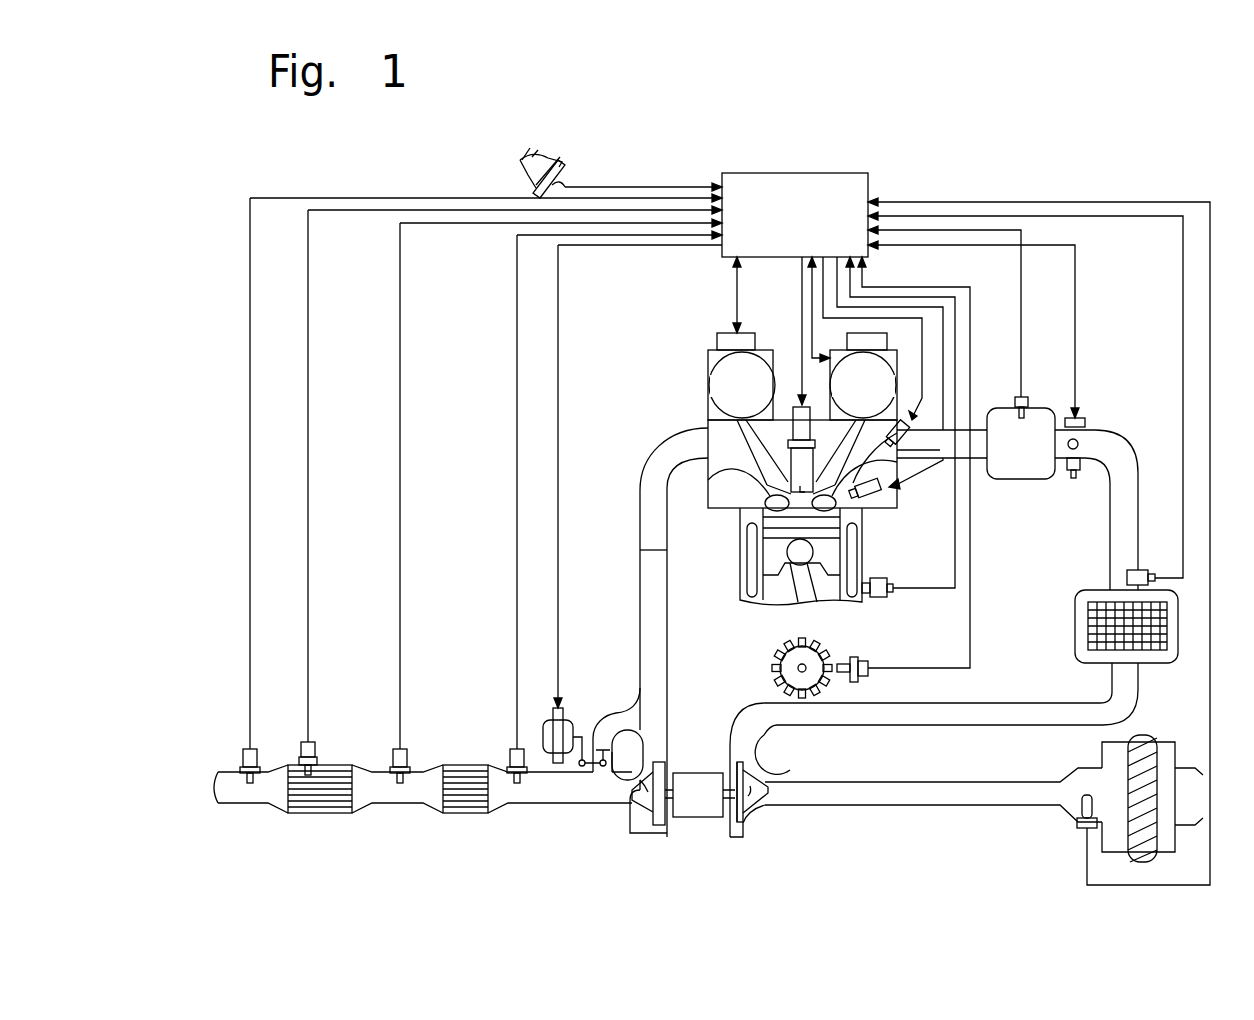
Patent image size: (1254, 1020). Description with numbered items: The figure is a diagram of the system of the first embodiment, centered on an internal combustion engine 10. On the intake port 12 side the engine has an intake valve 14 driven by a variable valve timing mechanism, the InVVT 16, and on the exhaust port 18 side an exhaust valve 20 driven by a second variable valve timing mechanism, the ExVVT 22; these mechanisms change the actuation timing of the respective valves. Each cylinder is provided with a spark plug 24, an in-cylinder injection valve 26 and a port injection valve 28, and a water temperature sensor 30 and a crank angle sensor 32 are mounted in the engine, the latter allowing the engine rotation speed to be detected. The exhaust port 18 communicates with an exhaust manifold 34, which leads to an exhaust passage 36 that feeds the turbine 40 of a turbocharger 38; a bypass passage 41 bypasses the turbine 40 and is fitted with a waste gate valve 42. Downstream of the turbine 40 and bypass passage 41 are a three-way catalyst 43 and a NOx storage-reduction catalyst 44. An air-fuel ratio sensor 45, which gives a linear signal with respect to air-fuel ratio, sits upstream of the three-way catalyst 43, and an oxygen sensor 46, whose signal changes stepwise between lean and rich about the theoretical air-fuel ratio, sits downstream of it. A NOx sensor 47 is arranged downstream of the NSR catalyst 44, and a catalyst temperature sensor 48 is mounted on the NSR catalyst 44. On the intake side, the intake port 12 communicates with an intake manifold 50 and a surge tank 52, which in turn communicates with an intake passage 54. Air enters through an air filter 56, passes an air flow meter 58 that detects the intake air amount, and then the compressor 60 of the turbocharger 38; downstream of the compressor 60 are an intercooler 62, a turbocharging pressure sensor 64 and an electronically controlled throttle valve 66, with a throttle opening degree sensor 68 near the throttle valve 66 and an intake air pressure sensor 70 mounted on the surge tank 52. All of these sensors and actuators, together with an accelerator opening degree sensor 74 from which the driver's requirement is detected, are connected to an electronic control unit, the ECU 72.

The internal combustion engine 10 is at (680, 350).
The intake port 12 is at (885, 494).
The intake valve 14 is at (830, 510).
The variable valve timing mechanism (InVVT) 16 is at (900, 352).
The exhaust port 18 is at (750, 468).
The exhaust valve 20 is at (743, 518).
The variable valve timing mechanism (ExVVT) 22 is at (708, 385).
The spark plug 24 is at (790, 438).
The in-cylinder injection valve 26 is at (862, 503).
The port injection valve 28 is at (913, 425).
The water temperature sensor 30 is at (888, 598).
The crank angle sensor 32 is at (868, 662).
The exhaust manifold 34 is at (650, 468).
The exhaust passage 36 is at (640, 568).
The turbocharger 38 is at (713, 778).
The turbine 40 is at (637, 800).
The bypass passage 41 is at (615, 712).
The waste gate valve 42 is at (602, 768).
The three-way catalyst 43 is at (458, 765).
The NOx storage-reduction catalyst (NSR catalyst) 44 is at (340, 765).
The air-fuel ratio sensor 45 is at (512, 748).
The oxygen sensor 46 is at (395, 748).
The NOx sensor 47 is at (245, 748).
The catalyst temperature sensor 48 is at (303, 742).
The intake manifold 50 is at (980, 458).
The surge tank 52 is at (1020, 480).
The intake passage 54 is at (945, 806).
The air filter 56 is at (1142, 742).
The air flow meter 58 is at (1082, 828).
The compressor 60 is at (772, 770).
The intercooler 62 is at (1075, 632).
The turbocharging pressure sensor 64 is at (1148, 572).
The electronically controlled throttle valve 66 is at (1080, 422).
The throttle opening degree sensor 68 is at (1072, 480).
The intake air pressure sensor 70 is at (1026, 400).
The electronic control unit (ECU) 72 is at (828, 172).
The accelerator opening degree sensor 74 is at (565, 170).